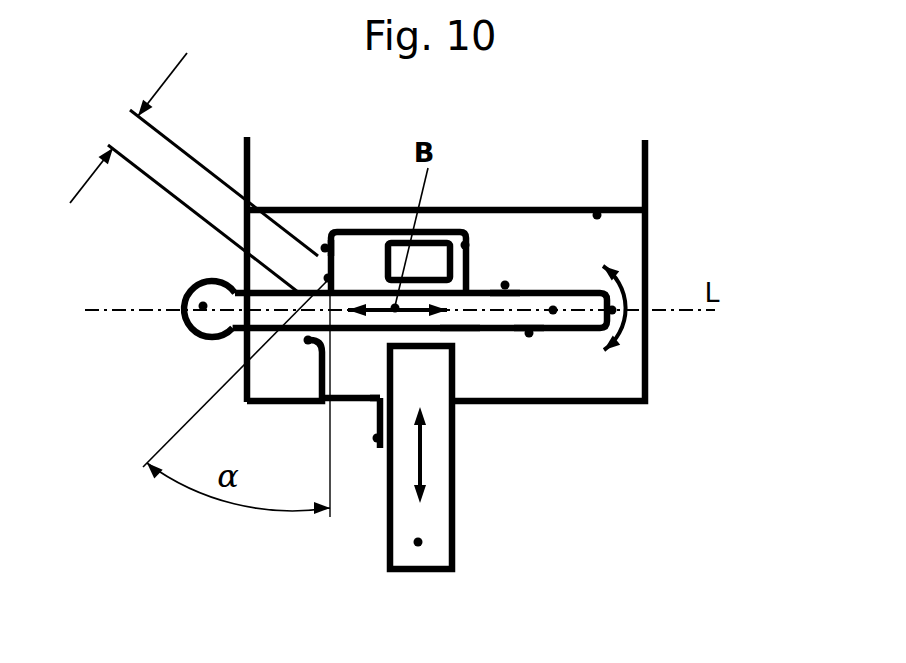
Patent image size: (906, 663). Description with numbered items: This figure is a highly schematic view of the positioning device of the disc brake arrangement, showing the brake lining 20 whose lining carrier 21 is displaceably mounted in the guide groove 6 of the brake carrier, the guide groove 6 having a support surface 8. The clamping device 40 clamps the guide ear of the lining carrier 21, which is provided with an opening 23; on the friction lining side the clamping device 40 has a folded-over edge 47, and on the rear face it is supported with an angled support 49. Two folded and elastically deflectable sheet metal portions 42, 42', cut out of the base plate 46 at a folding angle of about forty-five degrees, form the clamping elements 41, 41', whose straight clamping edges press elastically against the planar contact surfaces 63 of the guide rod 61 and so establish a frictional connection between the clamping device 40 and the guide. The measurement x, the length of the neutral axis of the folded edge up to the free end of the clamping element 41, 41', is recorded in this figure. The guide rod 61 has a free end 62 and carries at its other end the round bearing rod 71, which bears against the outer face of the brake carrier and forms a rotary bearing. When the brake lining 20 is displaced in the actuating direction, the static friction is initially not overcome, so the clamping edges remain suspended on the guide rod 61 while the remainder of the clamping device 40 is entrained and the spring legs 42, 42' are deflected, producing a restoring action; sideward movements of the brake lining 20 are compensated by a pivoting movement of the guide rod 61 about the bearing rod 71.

The guide groove 6 is at (665, 355).
The support surface 8 is at (597, 215).
The brake lining 20 is at (334, 560).
The lining carrier 21 is at (418, 542).
The opening 23 is at (398, 340).
The clamping device 40 is at (362, 212).
The clamping element 41 is at (194, 172).
The clamping element 41' is at (313, 398).
The folded sheet metal portion 42 is at (485, 401).
The folded sheet metal portion 42' is at (204, 365).
The base plate 46 is at (325, 248).
The folded-over edge 47 is at (465, 245).
The angled support 49 is at (377, 438).
The guide rod 61 is at (553, 310).
The free end 62 is at (618, 311).
The contact surface 63 is at (529, 333).
The bearing rod 71 is at (203, 306).